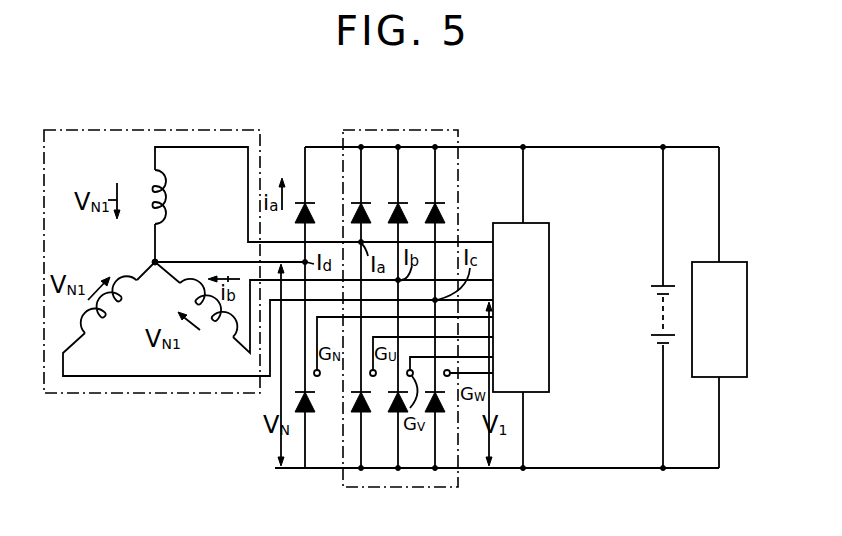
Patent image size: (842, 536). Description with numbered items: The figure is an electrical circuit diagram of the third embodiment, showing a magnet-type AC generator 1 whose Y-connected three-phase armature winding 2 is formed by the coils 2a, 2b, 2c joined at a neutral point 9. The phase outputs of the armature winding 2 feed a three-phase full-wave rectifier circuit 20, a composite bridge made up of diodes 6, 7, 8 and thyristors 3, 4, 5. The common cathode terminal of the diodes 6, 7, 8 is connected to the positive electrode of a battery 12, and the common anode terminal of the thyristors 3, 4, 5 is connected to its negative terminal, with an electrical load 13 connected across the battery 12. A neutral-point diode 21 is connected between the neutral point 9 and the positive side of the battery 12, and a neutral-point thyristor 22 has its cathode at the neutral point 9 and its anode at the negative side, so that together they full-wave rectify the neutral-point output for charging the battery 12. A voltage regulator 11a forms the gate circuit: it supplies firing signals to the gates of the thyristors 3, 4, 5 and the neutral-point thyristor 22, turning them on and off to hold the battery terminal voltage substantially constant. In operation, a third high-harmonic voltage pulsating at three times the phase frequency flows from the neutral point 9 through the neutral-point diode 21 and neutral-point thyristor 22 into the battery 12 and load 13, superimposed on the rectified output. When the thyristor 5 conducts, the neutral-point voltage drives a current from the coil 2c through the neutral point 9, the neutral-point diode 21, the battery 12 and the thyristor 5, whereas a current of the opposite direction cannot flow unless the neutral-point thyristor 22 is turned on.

The magnet-type AC generator 1 is at (145, 131).
The armature winding 2 is at (159, 259).
The coil 2a is at (143, 178).
The coil 2b is at (210, 323).
The coil 2c is at (98, 338).
The thyristor 3 is at (354, 414).
The thyristor 4 is at (392, 413).
The thyristor 5 is at (440, 412).
The diode 6 is at (363, 203).
The diode 7 is at (401, 203).
The diode 8 is at (442, 204).
The neutral point 9 is at (160, 261).
The voltage regulator 11a is at (549, 254).
The battery 12 is at (651, 334).
The electrical load 13 is at (704, 262).
The rectifier circuit 20 is at (385, 130).
The neutral-point diode 21 is at (306, 202).
The neutral-point thyristor 22 is at (299, 396).